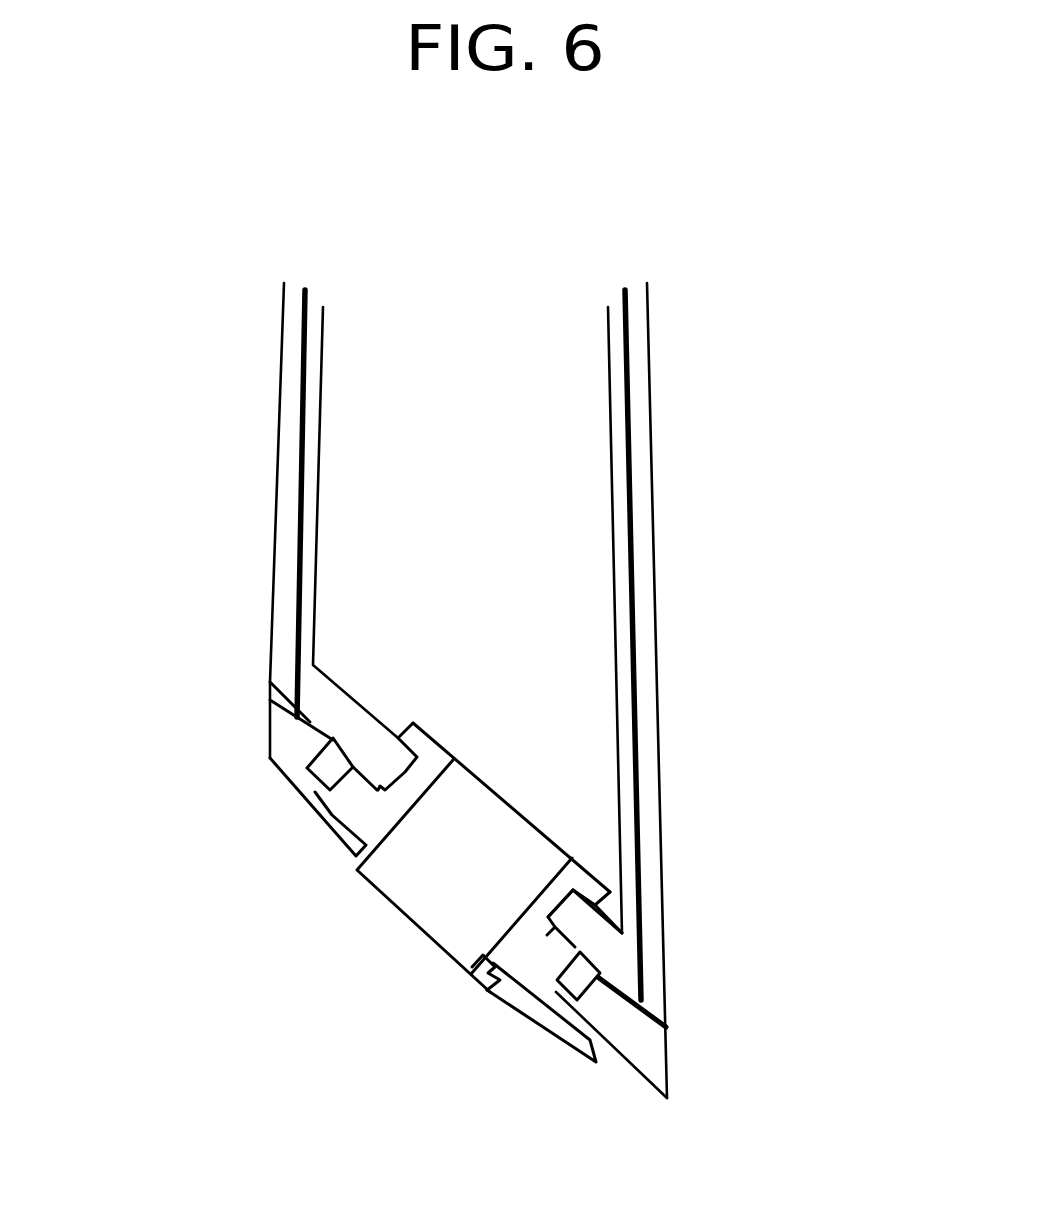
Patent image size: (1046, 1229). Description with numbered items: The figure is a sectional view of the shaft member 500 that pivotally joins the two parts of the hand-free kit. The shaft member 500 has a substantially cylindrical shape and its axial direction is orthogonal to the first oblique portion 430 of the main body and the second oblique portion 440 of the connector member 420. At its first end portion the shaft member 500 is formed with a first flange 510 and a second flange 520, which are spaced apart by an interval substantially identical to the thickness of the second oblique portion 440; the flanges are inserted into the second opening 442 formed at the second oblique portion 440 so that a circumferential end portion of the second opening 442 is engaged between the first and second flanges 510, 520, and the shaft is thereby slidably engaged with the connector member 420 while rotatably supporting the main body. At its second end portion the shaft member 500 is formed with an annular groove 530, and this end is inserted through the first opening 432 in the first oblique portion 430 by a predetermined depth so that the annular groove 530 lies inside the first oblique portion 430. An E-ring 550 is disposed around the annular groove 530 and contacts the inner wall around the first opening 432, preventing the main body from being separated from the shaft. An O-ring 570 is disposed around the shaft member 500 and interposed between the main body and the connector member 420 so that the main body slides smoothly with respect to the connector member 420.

The connector member 420 is at (708, 526).
The first oblique portion 430 is at (285, 743).
The first opening 432 is at (355, 802).
The second oblique portion 440 is at (595, 935).
The second opening 442 is at (553, 895).
The shaft member 500 is at (442, 900).
The first flange 510 is at (415, 735).
The second flange 520 is at (315, 722).
The annular groove 530 is at (492, 955).
The E-ring 550 is at (535, 1000).
The O-ring 570 is at (580, 980).